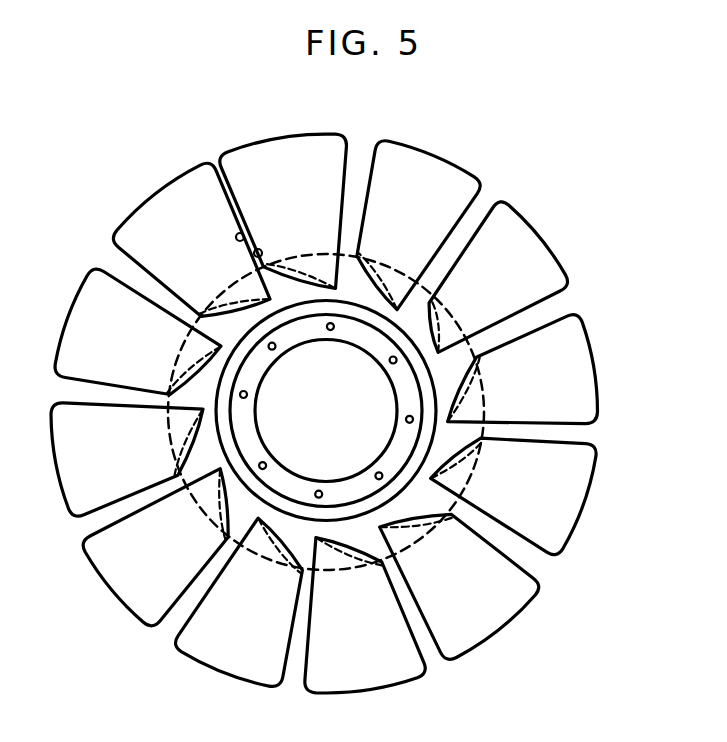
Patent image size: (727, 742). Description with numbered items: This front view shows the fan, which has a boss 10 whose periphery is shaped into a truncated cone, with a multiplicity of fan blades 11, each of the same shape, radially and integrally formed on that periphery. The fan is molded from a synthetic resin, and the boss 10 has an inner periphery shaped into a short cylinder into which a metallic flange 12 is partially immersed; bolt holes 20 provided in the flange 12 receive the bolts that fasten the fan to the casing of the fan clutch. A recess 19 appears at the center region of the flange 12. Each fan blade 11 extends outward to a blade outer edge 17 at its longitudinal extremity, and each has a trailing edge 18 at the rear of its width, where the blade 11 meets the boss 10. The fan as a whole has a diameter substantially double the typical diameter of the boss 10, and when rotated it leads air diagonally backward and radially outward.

The boss 10 is at (440, 306).
The fan blade 11 is at (326, 142).
The metallic flange 12 is at (367, 340).
The blade outer edge 17 is at (279, 139).
The trailing edge 18 is at (262, 253).
The recess 19 is at (237, 240).
The bolt hole 20 is at (330, 330).